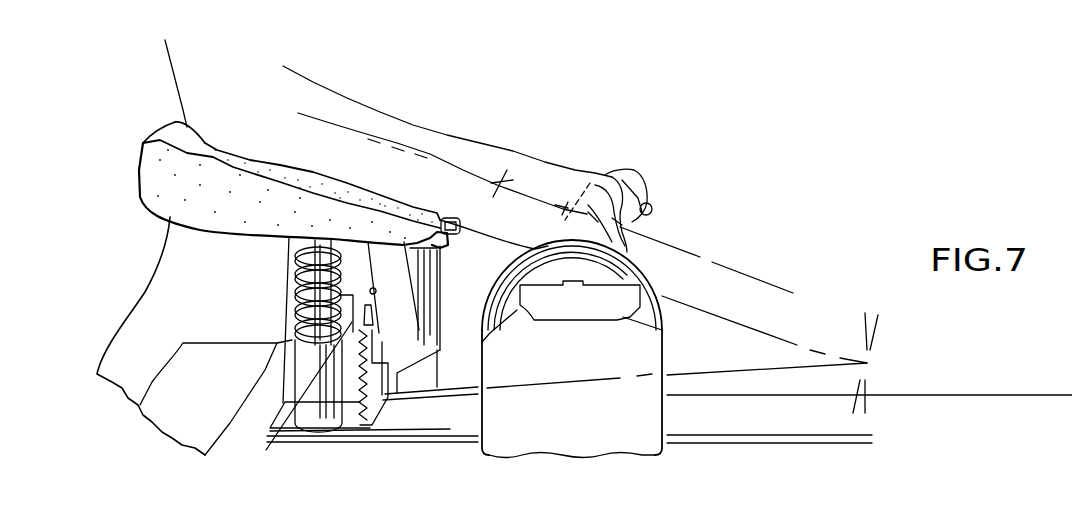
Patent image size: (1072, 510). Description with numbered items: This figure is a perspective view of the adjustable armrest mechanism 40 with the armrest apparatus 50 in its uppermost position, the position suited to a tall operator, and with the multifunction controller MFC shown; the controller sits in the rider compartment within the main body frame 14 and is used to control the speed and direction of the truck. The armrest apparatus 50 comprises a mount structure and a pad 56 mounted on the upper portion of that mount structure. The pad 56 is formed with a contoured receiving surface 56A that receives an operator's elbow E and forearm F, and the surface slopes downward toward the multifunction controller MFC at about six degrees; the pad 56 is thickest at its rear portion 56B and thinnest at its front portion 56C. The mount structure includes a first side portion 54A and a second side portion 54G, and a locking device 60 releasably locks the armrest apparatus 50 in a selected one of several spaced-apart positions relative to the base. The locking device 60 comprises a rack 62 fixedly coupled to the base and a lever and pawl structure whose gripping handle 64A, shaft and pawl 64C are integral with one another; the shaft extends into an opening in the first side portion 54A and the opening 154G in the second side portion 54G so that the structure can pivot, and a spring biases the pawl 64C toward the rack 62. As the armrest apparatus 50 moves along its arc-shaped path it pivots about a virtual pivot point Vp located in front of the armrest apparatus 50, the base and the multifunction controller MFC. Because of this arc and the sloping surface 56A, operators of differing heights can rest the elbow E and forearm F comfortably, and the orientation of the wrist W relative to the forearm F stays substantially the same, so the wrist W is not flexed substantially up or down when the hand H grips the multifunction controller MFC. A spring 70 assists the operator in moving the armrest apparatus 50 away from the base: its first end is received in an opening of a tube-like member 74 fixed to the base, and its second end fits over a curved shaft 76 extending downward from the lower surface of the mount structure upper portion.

The main body frame 14 is at (772, 427).
The adjustable armrest mechanism 40 is at (137, 128).
The armrest apparatus 50 is at (163, 107).
The first side portion 54A is at (388, 272).
The second side portion 54G is at (388, 275).
The pad 56 is at (150, 173).
The contoured receiving surface 56A is at (320, 183).
The rear portion 56B is at (160, 143).
The front portion 56C is at (313, 237).
The locking device 60 is at (462, 227).
The rack 62 is at (352, 390).
The gripping handle 64A is at (453, 247).
The pawl 64C is at (377, 317).
The spring 70 is at (320, 289).
The tube-like member 74 is at (324, 390).
The curved shaft 76 is at (310, 281).
The opening 154G is at (344, 402).
The elbow E is at (210, 130).
The forearm F is at (434, 145).
The wrist W is at (538, 152).
The hand H is at (601, 167).
The multifunction controller MFC is at (649, 176).
The virtual pivot point Vp is at (762, 320).